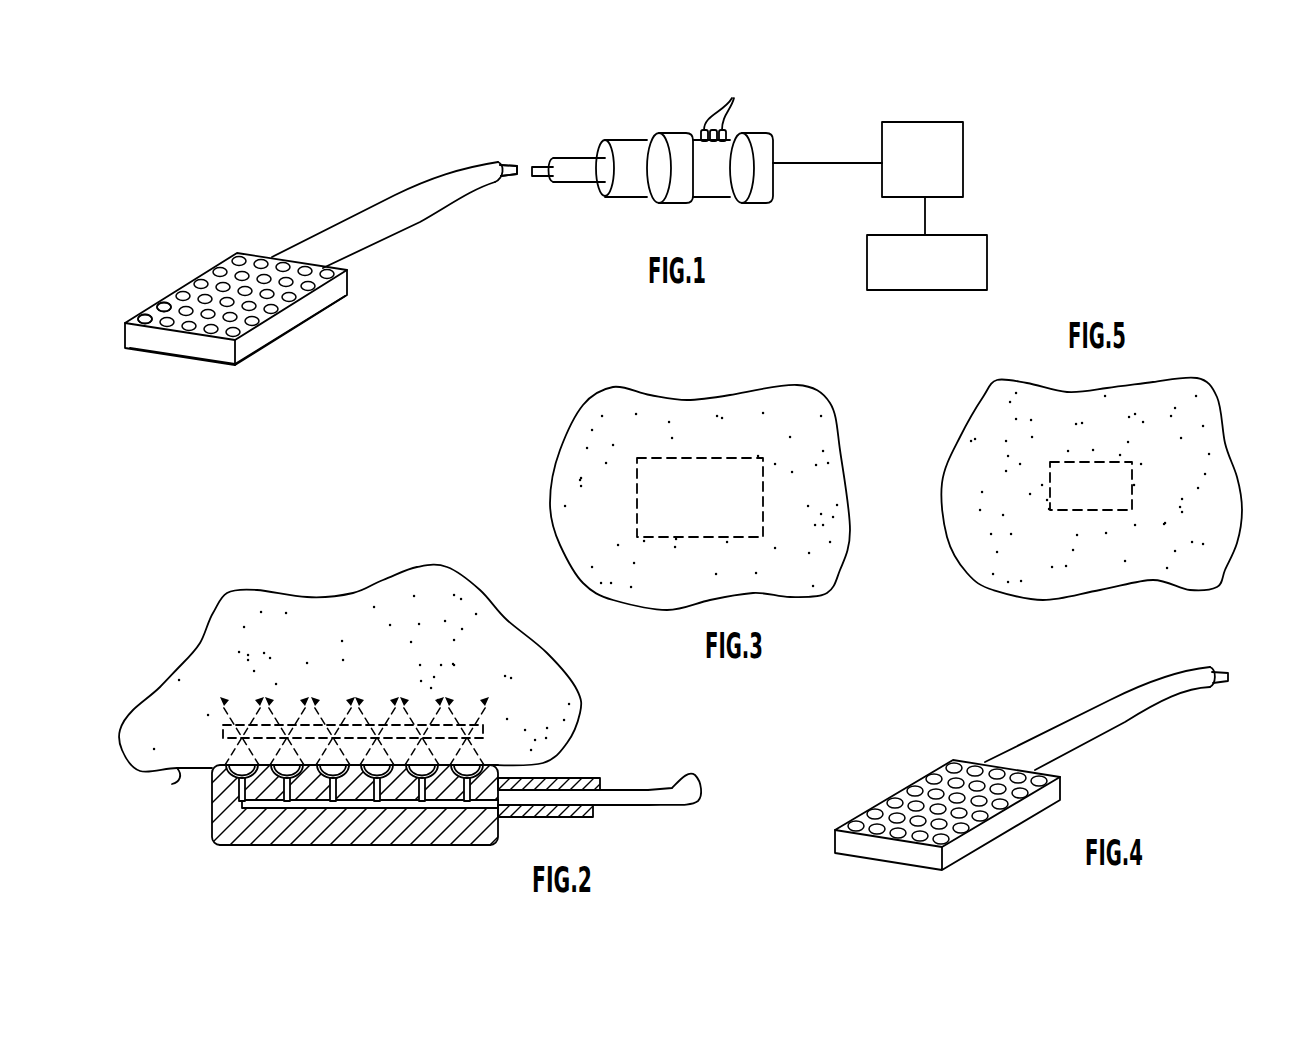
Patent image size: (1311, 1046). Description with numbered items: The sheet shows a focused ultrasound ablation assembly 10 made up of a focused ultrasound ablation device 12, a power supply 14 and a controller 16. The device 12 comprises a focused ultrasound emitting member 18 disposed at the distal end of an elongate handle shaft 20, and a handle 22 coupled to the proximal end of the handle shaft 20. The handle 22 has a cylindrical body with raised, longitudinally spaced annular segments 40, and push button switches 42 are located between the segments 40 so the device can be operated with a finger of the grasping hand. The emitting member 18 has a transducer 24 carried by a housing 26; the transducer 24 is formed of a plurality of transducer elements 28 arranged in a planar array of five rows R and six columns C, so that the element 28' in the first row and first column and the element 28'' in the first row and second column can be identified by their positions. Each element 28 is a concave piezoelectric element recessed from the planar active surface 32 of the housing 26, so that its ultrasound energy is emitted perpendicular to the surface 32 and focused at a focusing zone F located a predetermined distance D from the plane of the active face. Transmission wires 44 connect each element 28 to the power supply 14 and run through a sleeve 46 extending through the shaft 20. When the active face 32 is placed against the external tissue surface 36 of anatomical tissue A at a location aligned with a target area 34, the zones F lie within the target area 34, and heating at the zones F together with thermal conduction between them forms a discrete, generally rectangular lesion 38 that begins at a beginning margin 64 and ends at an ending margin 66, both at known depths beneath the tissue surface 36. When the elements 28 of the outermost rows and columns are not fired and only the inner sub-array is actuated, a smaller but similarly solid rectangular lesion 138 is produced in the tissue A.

In FIG. 1, the focused ultrasound ablation assembly 10 is at (846, 121).
In FIG. 1, the focused ultrasound ablation device 12 is at (490, 142).
In FIG. 1, the power supply 14 is at (965, 156).
In FIG. 1, the controller 16 is at (969, 234).
In FIG. 1, the focused ultrasound emitting member 18 is at (181, 368).
In FIG. 2, the focused ultrasound emitting member 18 is at (298, 850).
In FIG. 4, the focused ultrasound emitting member 18 is at (910, 770).
In FIG. 1, the handle shaft 20 is at (383, 182).
In FIG. 2, the handle shaft 20 is at (590, 777).
In FIG. 4, the handle shaft 20 is at (1134, 670).
In FIG. 1, the handle 22 is at (607, 202).
In FIG. 2, the transducer 24 is at (222, 794).
In FIG. 1, the housing 26 is at (258, 358).
In FIG. 2, the housing 26 is at (236, 852).
In FIG. 1, the transducer elements 28 is at (236, 266).
In FIG. 2, the transducer elements 28 is at (354, 827).
In FIG. 4, the transducer elements 28 is at (938, 831).
In FIG. 1, the transducer element in first row, first column 28' is at (126, 363).
In FIG. 1, the transducer element in first row, second column 28'' is at (134, 285).
In FIG. 1, the active surface 32 is at (186, 292).
In FIG. 2, the active surface 32 is at (461, 799).
In FIG. 2, the target area 34 is at (481, 730).
In FIG. 3, the target area 34 is at (631, 513).
In FIG. 2, the external tissue surface 36 is at (176, 778).
In FIG. 2, the lesion 38 is at (352, 735).
In FIG. 3, the lesion 38 is at (693, 483).
In FIG. 1, the annular segments 40 is at (684, 131).
In FIG. 1, the push button switches 42 is at (721, 106).
In FIG. 2, the transmission wires 44 is at (654, 796).
In FIG. 1, the sleeve 46 is at (510, 183).
In FIG. 2, the sleeve 46 is at (628, 805).
In FIG. 2, the beginning margin 64 is at (423, 812).
In FIG. 2, the ending margin 66 is at (312, 732).
In FIG. 5, the lesion 138 is at (1112, 474).
In FIG. 2, the anatomical tissue A is at (236, 617).
In FIG. 3, the anatomical tissue A is at (601, 434).
In FIG. 5, the anatomical tissue A is at (1219, 495).
In FIG. 1, the columns C is at (312, 293).
In FIG. 1, the rows R is at (223, 340).
In FIG. 2, the predetermined distance D is at (424, 735).
In FIG. 2, the focusing zones F is at (238, 737).